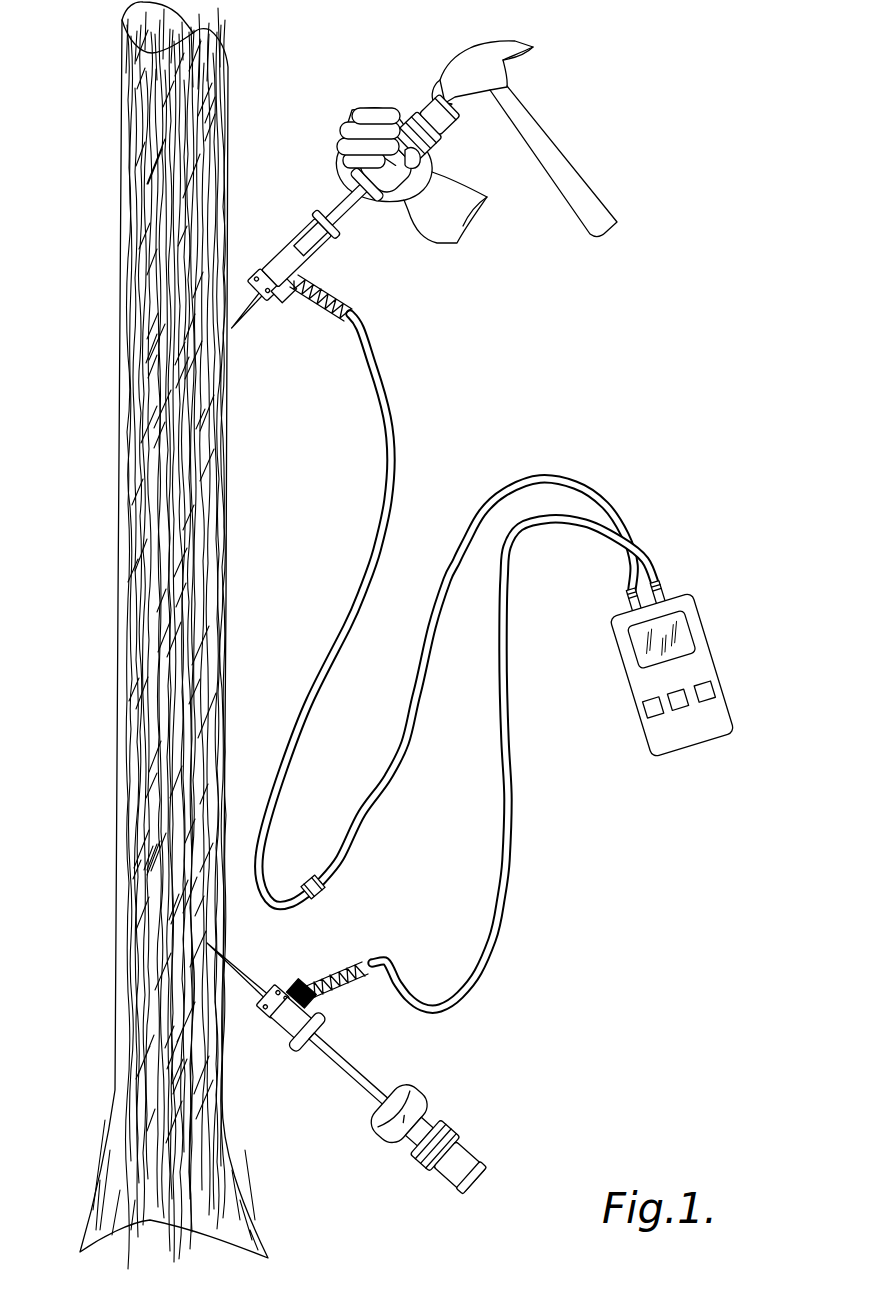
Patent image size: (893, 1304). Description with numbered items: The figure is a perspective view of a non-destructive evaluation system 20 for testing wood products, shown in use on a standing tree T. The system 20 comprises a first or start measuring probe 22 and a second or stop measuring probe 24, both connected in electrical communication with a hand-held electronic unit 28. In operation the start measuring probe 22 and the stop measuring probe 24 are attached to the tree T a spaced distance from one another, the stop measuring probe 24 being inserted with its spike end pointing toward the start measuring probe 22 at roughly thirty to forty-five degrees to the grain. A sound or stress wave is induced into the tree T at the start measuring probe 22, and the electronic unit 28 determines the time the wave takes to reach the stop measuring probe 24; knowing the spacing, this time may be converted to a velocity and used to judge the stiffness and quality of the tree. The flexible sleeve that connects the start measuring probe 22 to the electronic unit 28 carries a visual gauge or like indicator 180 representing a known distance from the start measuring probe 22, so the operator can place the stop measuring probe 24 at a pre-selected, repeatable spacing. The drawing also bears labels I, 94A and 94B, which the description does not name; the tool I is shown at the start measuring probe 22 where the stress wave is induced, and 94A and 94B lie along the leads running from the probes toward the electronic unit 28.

The tree T is at (133, 289).
The impact tool (hammer) I is at (561, 158).
The non-destructive evaluation system 20 is at (692, 249).
The start measuring probe 22 is at (316, 159).
The stop measuring probe 24 is at (414, 963).
The electronic unit 28 is at (708, 623).
The first tube/cable 94A is at (387, 389).
The second tube/cable 94B is at (497, 950).
The visual gauge or indicator 180 is at (307, 868).